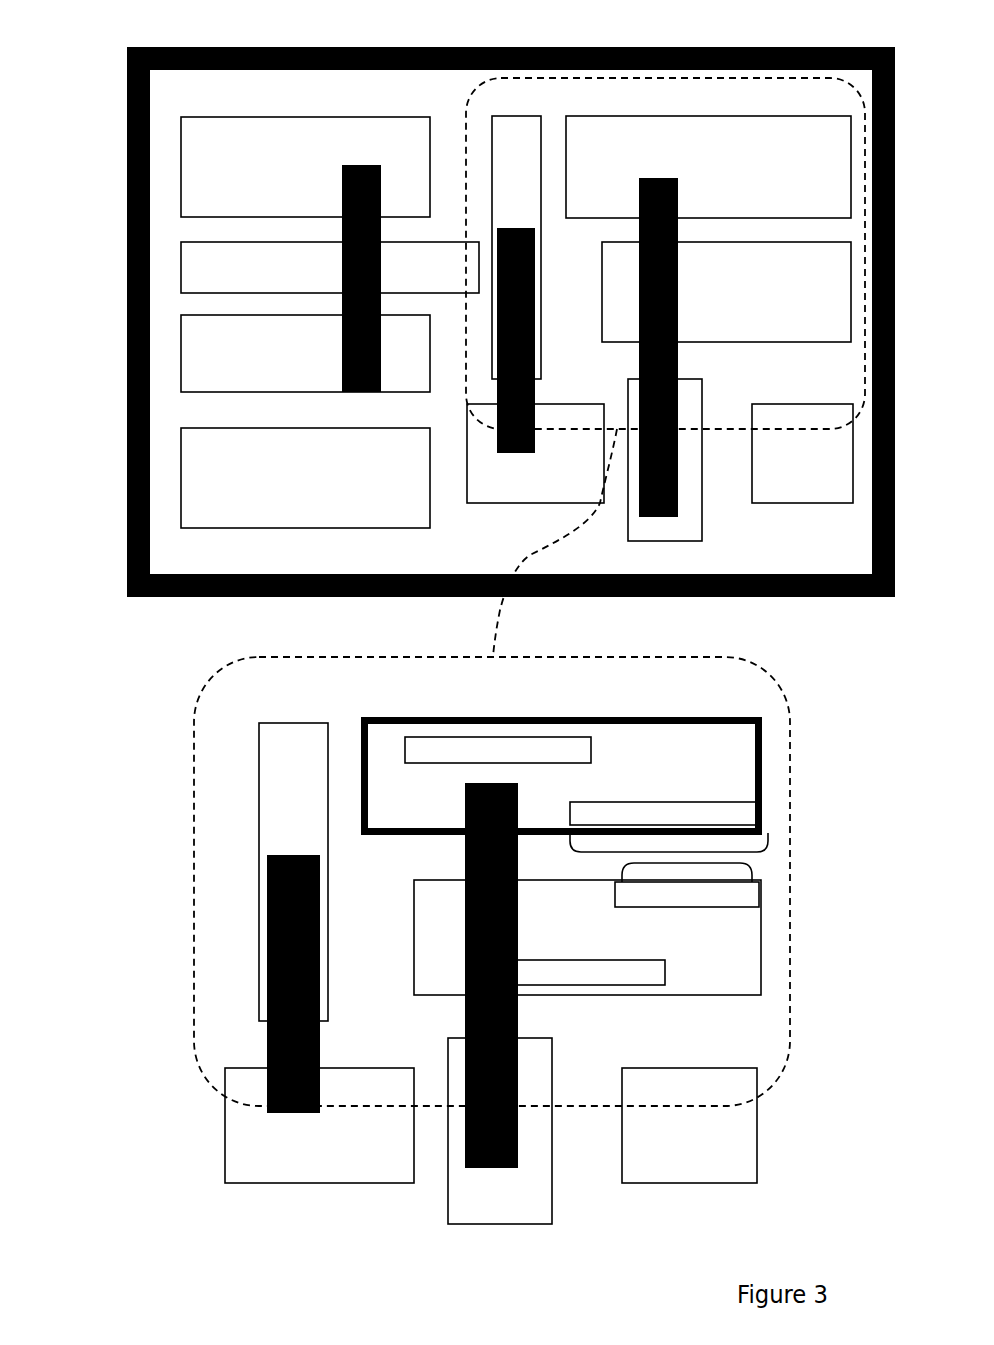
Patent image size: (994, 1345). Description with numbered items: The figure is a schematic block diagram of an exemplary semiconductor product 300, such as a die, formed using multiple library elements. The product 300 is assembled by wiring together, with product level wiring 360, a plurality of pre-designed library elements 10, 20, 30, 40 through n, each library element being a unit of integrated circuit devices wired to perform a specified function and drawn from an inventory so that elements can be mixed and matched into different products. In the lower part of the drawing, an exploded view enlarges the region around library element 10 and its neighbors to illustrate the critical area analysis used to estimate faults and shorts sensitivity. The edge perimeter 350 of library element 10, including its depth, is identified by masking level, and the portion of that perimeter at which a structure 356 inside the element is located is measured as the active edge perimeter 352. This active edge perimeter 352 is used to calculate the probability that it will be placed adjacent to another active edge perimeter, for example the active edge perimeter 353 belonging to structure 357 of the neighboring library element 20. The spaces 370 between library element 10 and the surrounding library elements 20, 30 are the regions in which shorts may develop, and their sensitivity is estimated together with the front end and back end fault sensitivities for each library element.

The product 300 is at (127, 52).
The product level wiring 360 is at (658, 178).
The library element n is at (298, 179).
The library element 40 is at (236, 276).
The library element 30 is at (504, 156).
The library element 10 is at (696, 177).
The library element 20 is at (715, 302).
The edge perimeter 350 is at (560, 717).
The structure 356 is at (677, 802).
The active edge perimeter 352 is at (770, 853).
The active edge perimeter 353 is at (747, 863).
The structure 357 is at (685, 907).
The spaces 370 is at (346, 815).